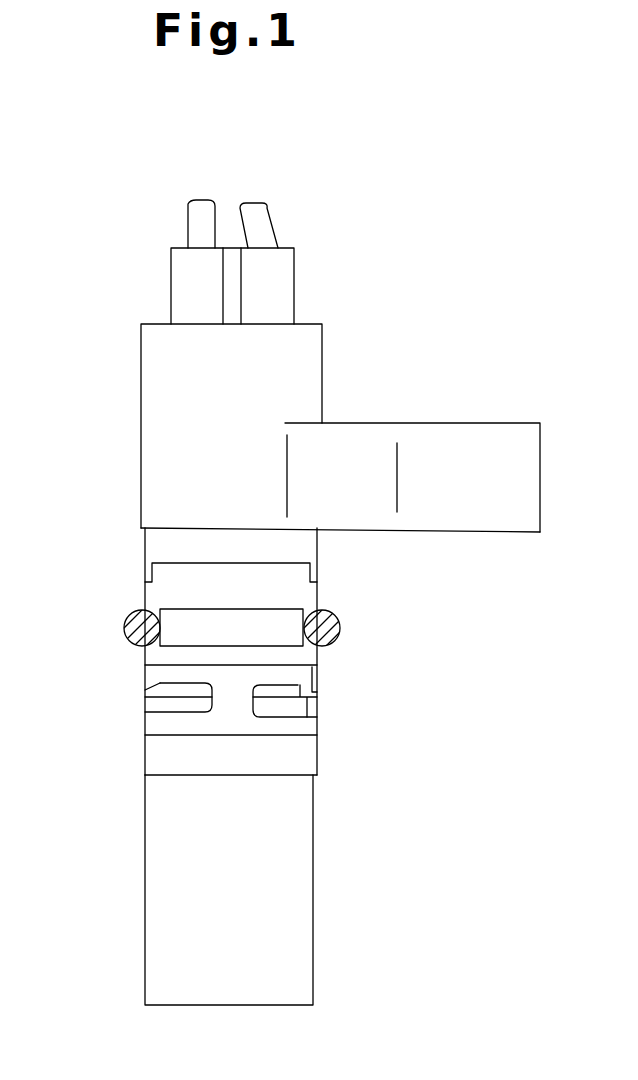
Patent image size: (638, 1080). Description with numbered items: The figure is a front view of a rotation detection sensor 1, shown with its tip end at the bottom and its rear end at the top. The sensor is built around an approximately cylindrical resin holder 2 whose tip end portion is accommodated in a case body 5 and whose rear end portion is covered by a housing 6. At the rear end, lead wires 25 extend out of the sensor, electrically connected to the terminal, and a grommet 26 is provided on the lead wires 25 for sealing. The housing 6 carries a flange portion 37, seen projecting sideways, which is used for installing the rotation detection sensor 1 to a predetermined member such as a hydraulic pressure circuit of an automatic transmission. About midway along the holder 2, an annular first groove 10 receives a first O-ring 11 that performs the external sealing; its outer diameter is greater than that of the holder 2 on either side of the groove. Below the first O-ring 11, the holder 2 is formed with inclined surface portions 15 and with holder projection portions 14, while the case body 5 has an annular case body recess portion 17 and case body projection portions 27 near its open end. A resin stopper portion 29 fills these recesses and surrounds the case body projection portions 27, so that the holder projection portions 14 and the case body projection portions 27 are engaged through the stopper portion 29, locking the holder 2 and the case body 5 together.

The rotation detection sensor 1 is at (448, 329).
The holder 2 is at (317, 592).
The case body 5 is at (313, 873).
The housing 6 is at (141, 373).
The first groove 10 is at (133, 609).
The first O-ring 11 is at (124, 630).
The holder projection portion 14 is at (160, 688).
The inclined surface portion 15 is at (160, 673).
The case body recess portion 17 is at (153, 722).
The lead wire 25 is at (187, 216).
The grommet 26 is at (292, 277).
The case body projection portion 27 is at (147, 707).
The stopper portion 29 is at (234, 728).
The flange portion 37 is at (371, 421).